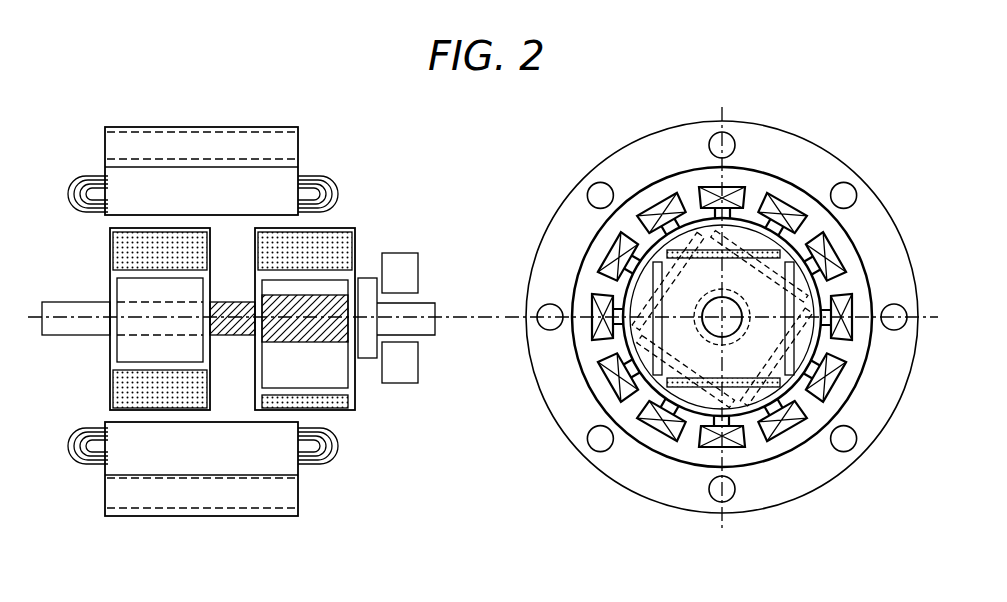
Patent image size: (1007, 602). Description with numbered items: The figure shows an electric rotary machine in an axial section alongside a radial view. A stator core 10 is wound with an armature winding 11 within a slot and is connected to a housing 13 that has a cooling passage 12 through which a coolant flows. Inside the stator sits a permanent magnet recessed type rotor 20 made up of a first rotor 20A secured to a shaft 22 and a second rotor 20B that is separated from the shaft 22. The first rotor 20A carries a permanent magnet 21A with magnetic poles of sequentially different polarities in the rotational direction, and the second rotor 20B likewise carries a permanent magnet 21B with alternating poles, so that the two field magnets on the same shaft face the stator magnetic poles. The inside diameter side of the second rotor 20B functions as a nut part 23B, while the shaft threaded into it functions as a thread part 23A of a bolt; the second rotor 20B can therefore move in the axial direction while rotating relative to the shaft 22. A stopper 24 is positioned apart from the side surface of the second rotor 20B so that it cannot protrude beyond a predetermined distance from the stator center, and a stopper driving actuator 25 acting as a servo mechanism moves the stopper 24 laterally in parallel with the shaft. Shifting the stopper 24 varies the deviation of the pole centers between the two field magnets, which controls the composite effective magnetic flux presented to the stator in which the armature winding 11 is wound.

The stator core 10 is at (127, 165).
The armature winding 11 is at (75, 172).
The cooling passage 12 is at (173, 132).
The housing 13 is at (277, 127).
The permanent magnet recessed type rotor 20 is at (820, 230).
The first rotor 20A is at (112, 397).
The second rotor 20B is at (258, 405).
The permanent magnet 21A is at (188, 350).
The permanent magnet 21B is at (325, 380).
The shaft 22 is at (430, 335).
The thread part 23A is at (233, 300).
The nut part 23B is at (340, 343).
The stopper 24 is at (368, 278).
The stopper driving actuator 25 is at (405, 265).